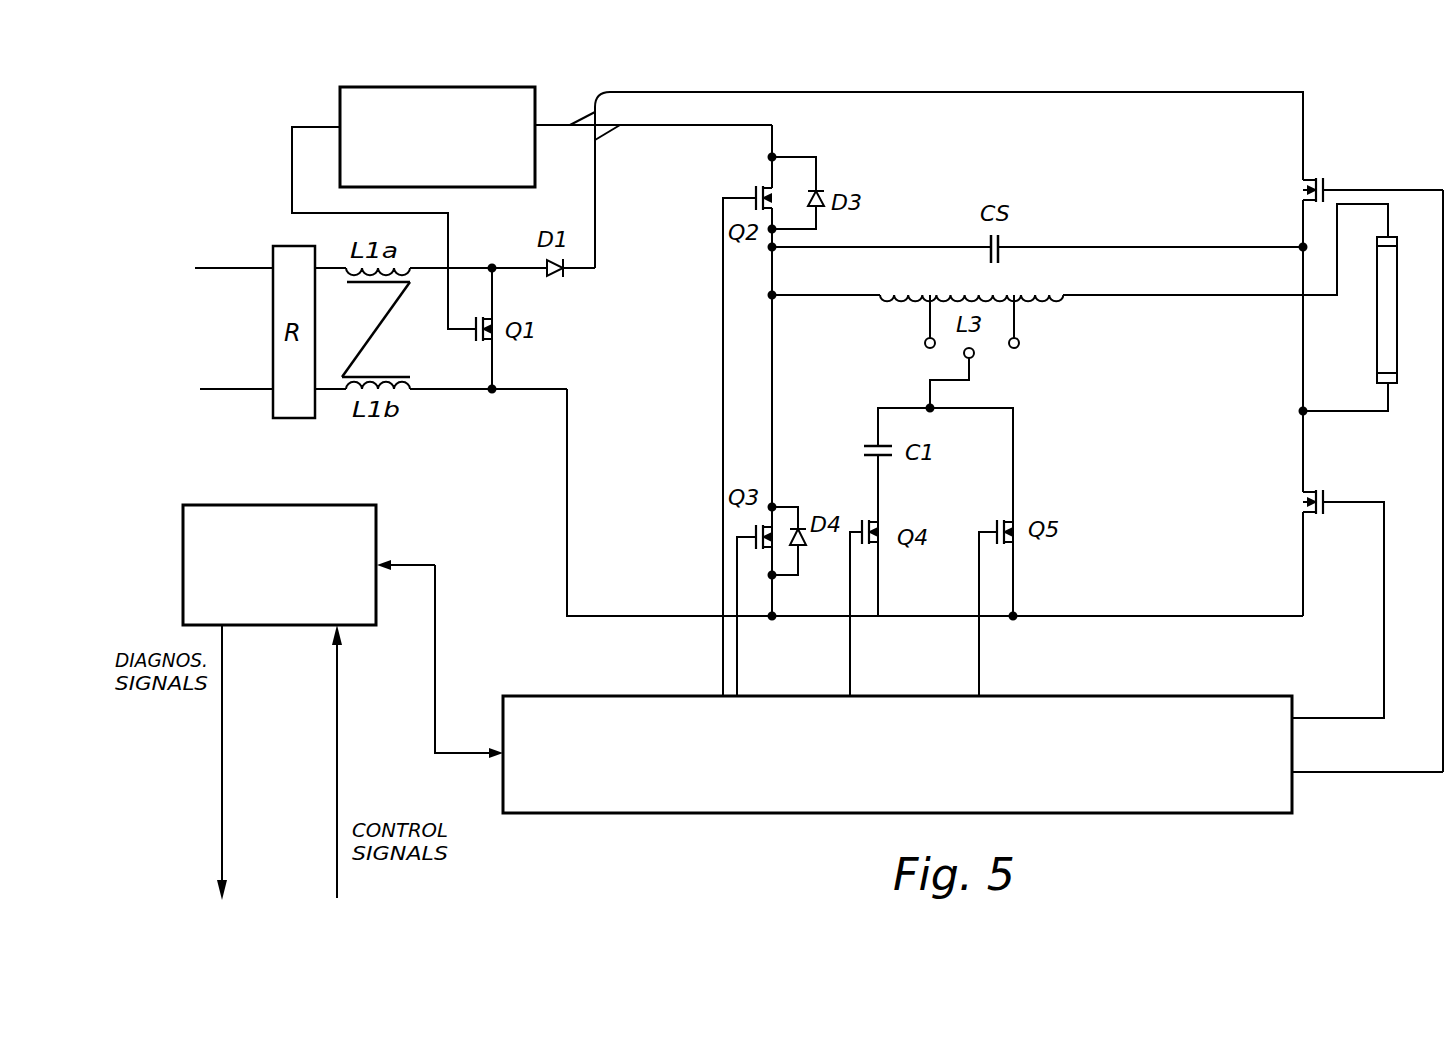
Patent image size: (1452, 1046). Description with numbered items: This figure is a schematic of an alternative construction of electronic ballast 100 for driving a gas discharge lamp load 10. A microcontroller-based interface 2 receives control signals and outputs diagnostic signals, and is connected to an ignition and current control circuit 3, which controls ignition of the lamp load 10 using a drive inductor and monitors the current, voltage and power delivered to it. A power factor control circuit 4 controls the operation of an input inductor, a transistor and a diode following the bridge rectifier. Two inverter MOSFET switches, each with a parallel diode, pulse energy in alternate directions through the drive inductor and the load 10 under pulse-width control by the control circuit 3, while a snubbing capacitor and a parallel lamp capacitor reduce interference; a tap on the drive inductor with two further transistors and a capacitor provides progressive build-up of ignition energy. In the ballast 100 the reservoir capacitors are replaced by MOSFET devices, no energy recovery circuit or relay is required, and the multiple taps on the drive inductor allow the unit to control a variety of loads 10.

The microcontroller-based interface 2 is at (377, 516).
The ignition and current control circuit 3 is at (729, 814).
The power factor control circuit 4 is at (340, 96).
The gas discharge lamp load 10 is at (1397, 234).
The electronic ballast 100 is at (1296, 823).